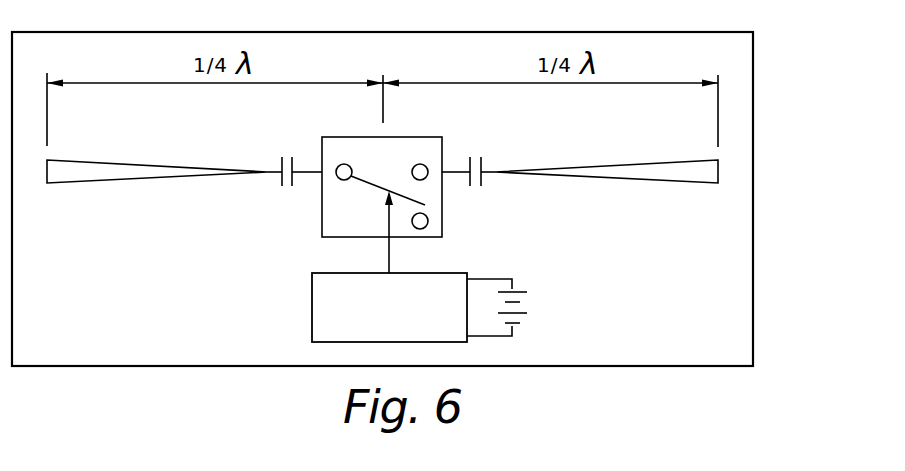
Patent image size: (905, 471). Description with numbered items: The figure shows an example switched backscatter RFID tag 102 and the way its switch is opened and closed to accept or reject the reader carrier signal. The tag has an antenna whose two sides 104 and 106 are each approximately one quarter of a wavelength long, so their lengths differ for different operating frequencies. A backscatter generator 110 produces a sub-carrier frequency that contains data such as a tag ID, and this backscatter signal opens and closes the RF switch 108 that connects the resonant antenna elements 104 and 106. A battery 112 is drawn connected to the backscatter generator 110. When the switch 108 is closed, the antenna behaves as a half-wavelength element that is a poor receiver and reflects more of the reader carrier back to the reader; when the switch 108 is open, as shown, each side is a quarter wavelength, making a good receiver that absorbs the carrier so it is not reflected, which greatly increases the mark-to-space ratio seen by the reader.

The switched backscatter RFID tag 102 is at (608, 367).
The antenna side 104 is at (88, 160).
The antenna side 106 is at (674, 160).
The RF switch 108 is at (442, 193).
The backscatter generator 110 is at (312, 308).
The battery 112 is at (532, 305).